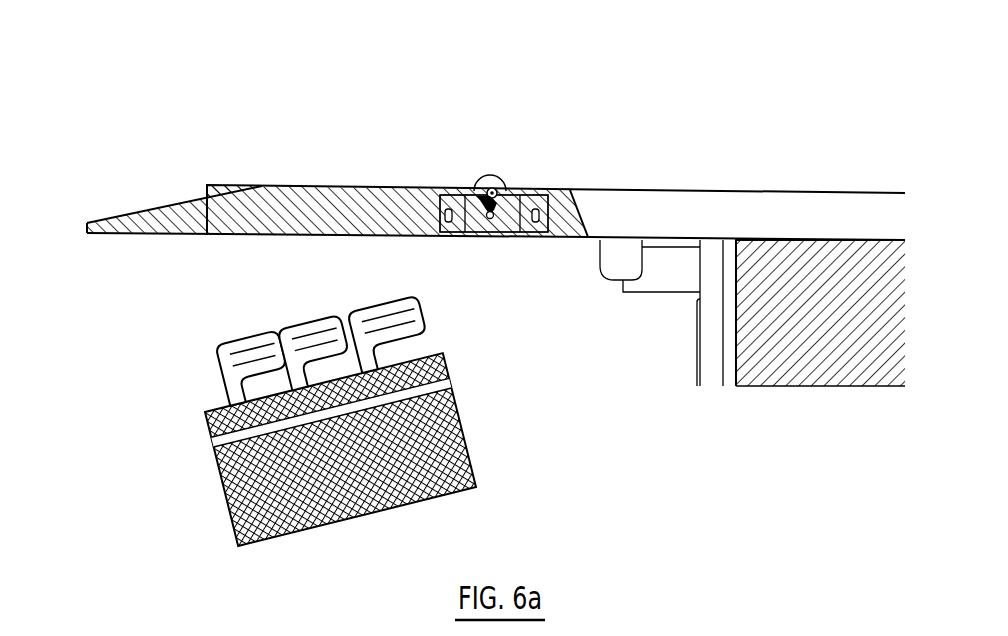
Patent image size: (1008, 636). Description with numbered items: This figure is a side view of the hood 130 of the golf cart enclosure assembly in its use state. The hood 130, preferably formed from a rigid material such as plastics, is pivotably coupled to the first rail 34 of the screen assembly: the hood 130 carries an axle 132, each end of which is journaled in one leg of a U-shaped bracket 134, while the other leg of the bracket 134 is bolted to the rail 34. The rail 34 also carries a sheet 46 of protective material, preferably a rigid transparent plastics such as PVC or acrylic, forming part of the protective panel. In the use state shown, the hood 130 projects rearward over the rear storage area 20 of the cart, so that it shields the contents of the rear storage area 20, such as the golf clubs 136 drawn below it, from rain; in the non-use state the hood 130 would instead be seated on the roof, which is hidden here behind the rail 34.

The hood 130 is at (140, 214).
The axle 132 is at (491, 187).
The U-shaped bracket 134 is at (503, 190).
The first rail 34 is at (766, 212).
The sheet of protective material 46 is at (802, 350).
The rear storage area 20 is at (335, 293).
The golf clubs 136 is at (226, 490).